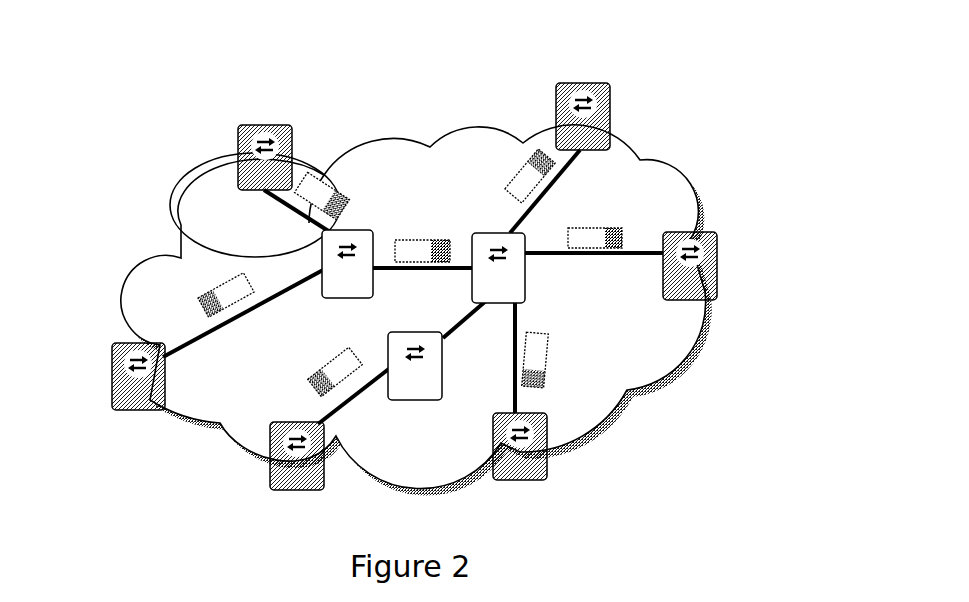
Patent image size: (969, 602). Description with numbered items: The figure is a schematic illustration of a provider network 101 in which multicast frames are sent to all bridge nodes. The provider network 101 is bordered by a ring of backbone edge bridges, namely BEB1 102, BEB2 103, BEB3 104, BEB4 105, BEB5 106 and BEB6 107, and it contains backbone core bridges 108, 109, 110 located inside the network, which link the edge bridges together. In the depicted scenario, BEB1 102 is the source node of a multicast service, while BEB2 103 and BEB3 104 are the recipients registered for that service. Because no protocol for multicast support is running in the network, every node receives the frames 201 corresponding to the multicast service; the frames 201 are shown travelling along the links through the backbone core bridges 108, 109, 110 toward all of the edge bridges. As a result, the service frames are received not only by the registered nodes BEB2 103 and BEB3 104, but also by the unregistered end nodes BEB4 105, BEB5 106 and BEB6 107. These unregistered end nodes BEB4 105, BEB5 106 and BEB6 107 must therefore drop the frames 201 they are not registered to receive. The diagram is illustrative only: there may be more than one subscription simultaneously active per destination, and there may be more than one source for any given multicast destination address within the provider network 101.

The provider network 101 is at (120, 176).
The backbone edge bridge BEB1 102 is at (250, 124).
The backbone edge bridge BEB2 103 is at (610, 98).
The backbone edge bridge BEB3 104 is at (717, 262).
The backbone edge bridge BEB4 105 is at (547, 462).
The backbone edge bridge BEB5 106 is at (285, 490).
The backbone edge bridge BEB6 107 is at (112, 378).
The backbone core bridge 108 is at (385, 232).
The backbone core bridge 109 is at (490, 233).
The backbone core bridge 110 is at (442, 392).
The frames 201 is at (420, 240).